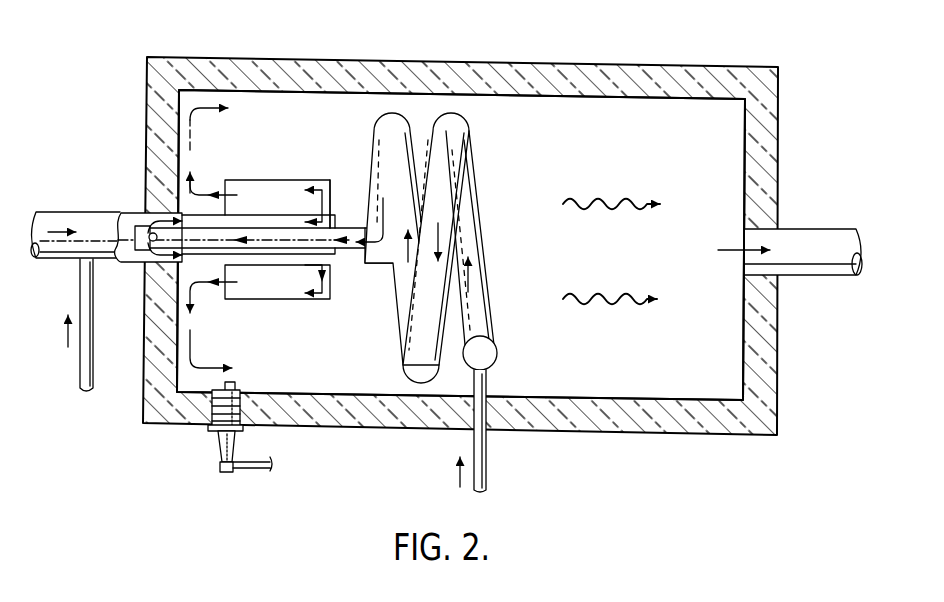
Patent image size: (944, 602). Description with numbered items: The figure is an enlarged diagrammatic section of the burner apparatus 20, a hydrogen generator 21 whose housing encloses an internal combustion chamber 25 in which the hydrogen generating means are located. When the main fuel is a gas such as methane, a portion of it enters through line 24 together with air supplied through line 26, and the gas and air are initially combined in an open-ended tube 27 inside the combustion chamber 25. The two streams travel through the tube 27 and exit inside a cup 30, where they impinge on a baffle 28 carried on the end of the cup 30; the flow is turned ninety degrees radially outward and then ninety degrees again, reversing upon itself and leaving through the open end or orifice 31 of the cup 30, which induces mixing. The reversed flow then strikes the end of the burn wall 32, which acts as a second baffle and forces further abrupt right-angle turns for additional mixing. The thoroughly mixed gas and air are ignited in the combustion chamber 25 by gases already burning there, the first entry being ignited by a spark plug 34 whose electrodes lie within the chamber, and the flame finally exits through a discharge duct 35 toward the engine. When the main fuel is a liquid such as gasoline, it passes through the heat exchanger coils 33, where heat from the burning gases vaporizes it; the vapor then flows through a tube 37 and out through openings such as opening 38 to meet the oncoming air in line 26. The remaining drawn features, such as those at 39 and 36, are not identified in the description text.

The burner apparatus 20 is at (601, 56).
The hydrogen generator 21 is at (270, 58).
The combustion chamber 25 is at (311, 110).
The air line 26 is at (65, 212).
The fuel line 24 is at (80, 362).
The burn wall 32 is at (182, 200).
The tube 37 is at (338, 263).
The opening 38 is at (136, 262).
The tube 27 is at (260, 215).
The baffle 28 is at (331, 197).
The cup 30 is at (263, 300).
The opening 31 is at (208, 191).
The lower flow passage 39 is at (220, 293).
The heat exchanger coils 33 is at (478, 193).
The supply tube 36 is at (487, 468).
The spark plug 34 is at (217, 411).
The discharge duct 35 is at (812, 227).